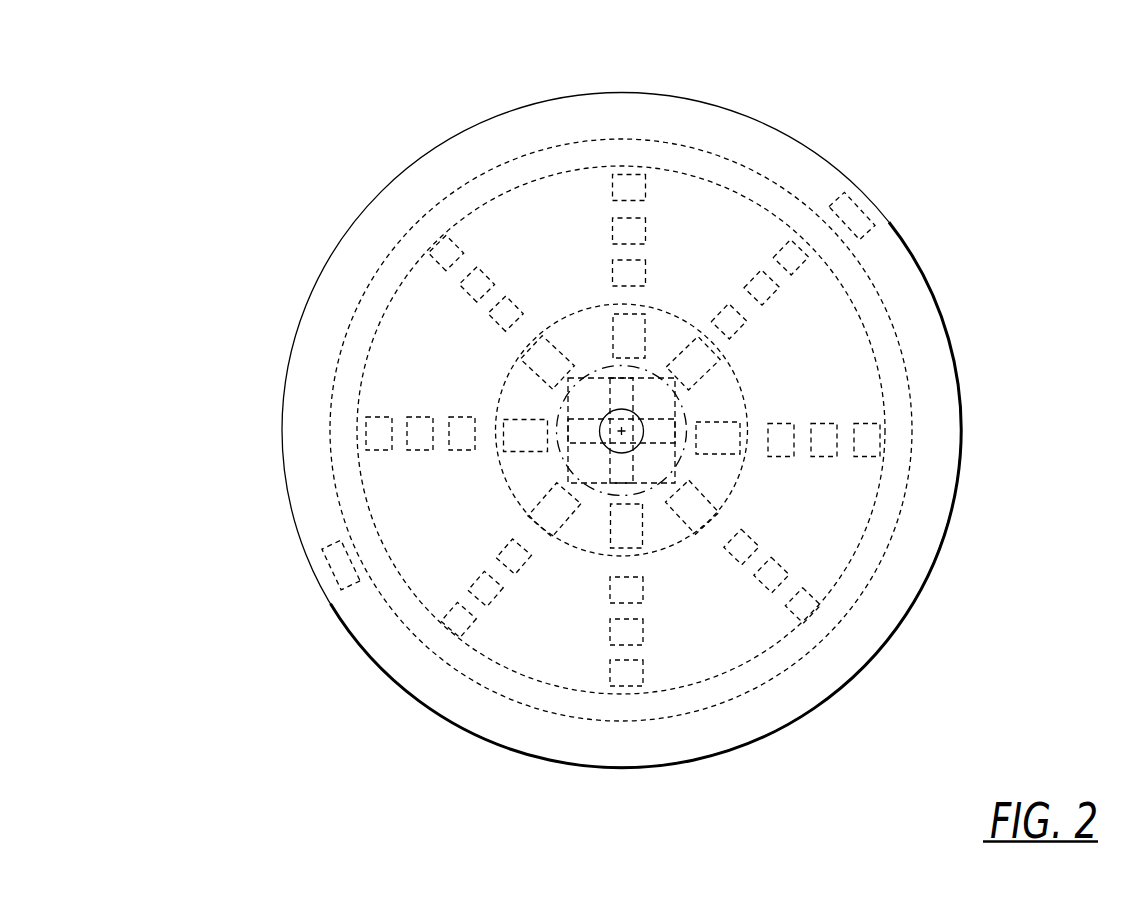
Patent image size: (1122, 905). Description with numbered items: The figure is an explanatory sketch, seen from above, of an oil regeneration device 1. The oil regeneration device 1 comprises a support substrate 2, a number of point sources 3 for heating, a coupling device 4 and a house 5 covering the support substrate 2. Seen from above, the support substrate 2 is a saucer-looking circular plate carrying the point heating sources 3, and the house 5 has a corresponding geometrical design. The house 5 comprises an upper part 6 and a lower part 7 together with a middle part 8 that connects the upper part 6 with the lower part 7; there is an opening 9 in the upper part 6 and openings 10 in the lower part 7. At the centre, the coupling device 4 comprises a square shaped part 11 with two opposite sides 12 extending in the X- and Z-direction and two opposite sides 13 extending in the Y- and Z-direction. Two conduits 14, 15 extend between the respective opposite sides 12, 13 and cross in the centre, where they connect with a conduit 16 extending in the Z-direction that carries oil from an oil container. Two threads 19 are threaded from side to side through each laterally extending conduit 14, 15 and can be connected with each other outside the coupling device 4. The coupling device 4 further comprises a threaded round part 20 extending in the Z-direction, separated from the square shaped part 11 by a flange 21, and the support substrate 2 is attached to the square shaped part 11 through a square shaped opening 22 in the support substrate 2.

The oil regeneration device 1 is at (792, 112).
The support substrate 2 is at (855, 292).
The point sources for heating 3 is at (872, 443).
The coupling device 4 is at (658, 368).
The house 5 is at (880, 242).
The upper part 6 is at (655, 402).
The lower part 7 is at (285, 390).
The middle part 8 is at (428, 397).
The opening 9 is at (621, 431).
The openings 10 is at (848, 200).
The square shaped part 11 is at (688, 464).
The opposite sides 12 is at (568, 456).
The opposite sides 13 is at (605, 366).
The conduit 14 is at (668, 427).
The conduit 15 is at (654, 368).
The conduit 16 is at (612, 462).
The threads 19 is at (568, 418).
The threaded round part 20 is at (612, 485).
The flange 21 is at (687, 540).
The square shaped opening 22 is at (580, 463).